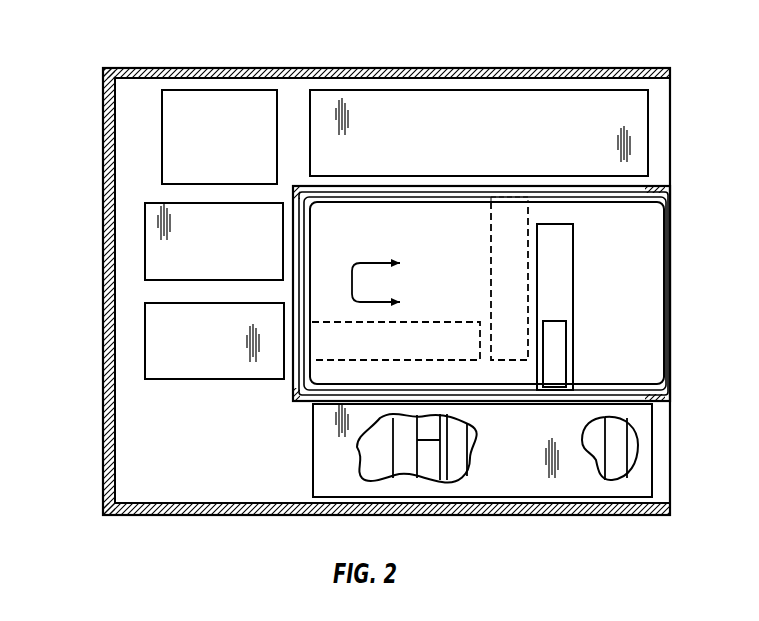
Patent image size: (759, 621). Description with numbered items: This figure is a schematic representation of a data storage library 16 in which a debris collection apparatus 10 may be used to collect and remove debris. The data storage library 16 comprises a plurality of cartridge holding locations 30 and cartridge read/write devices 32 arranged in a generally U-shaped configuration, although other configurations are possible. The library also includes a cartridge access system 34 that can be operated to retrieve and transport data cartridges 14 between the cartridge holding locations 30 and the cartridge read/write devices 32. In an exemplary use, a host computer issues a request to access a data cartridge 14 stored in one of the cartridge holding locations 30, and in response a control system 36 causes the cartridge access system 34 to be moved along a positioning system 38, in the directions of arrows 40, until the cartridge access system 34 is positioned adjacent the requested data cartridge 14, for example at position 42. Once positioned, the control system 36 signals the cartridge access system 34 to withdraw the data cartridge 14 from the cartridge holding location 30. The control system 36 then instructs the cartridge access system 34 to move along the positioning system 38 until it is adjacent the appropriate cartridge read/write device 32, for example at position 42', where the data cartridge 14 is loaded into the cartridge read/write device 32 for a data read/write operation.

The data storage library 16 is at (93, 57).
The control system 36 is at (162, 124).
The cartridge holding locations 30 is at (648, 116).
The cartridge read/write devices 32 is at (145, 338).
The cartridge access system 34 is at (585, 248).
The positioning system 38 is at (637, 380).
The arrows 40 is at (372, 262).
The position 42' is at (396, 327).
The position 42 is at (588, 307).
The data cartridges 14 is at (443, 452).
The debris collection apparatus 10 is at (627, 435).